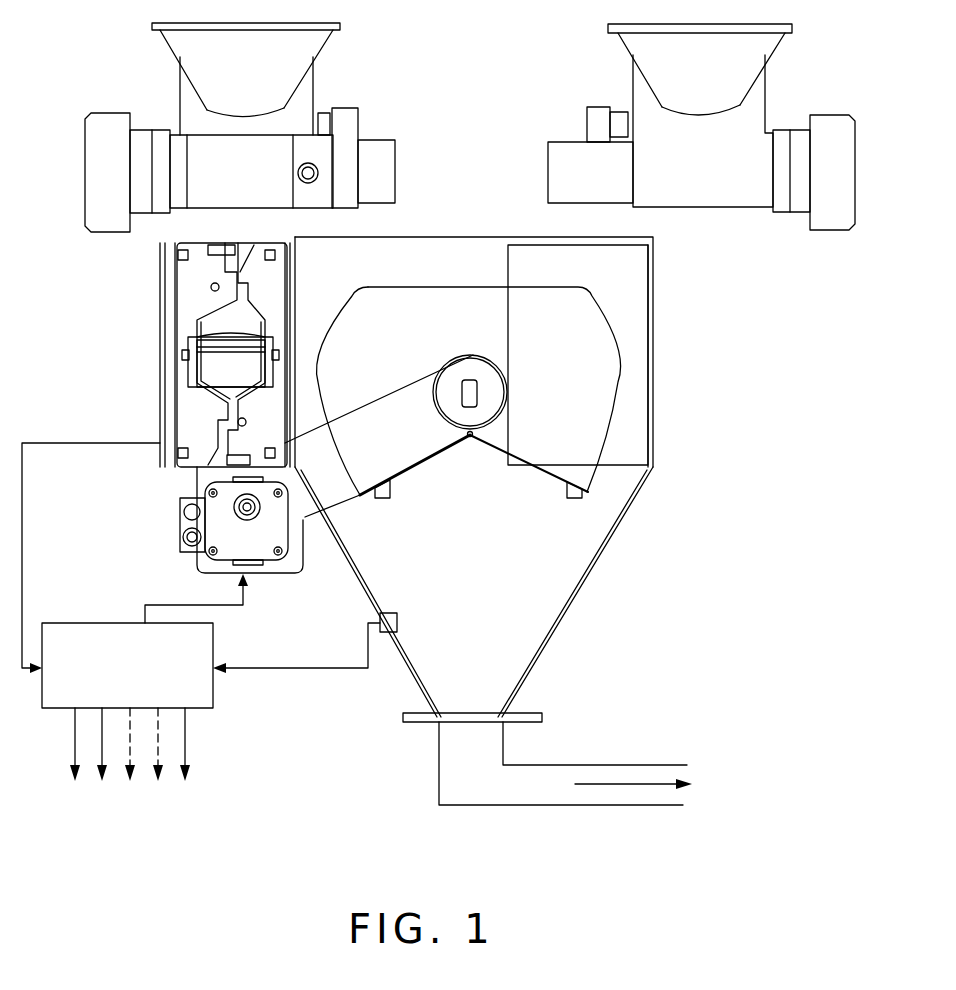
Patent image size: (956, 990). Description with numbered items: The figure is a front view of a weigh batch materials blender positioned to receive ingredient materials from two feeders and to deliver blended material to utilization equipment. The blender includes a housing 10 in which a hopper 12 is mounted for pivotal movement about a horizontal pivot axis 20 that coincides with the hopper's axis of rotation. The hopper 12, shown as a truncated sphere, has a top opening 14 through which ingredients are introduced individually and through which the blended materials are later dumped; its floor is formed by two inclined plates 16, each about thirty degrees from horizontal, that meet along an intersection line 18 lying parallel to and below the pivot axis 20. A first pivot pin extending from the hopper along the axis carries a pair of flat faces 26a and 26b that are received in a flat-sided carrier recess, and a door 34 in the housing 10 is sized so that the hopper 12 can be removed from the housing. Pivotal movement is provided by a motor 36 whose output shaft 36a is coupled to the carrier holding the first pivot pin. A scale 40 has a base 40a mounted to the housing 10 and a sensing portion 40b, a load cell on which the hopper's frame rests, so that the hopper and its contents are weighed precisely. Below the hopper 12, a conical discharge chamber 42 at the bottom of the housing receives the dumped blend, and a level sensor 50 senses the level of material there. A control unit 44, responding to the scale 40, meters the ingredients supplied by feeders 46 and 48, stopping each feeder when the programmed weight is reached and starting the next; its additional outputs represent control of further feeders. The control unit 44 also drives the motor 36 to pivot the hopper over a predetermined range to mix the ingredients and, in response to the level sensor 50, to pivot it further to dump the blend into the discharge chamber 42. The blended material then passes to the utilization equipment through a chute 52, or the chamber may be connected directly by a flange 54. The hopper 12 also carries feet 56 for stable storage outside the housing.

The housing 10 is at (473, 237).
The hopper 12 is at (603, 317).
The top opening 14 is at (436, 287).
The inclined plates 16 is at (457, 442).
The intersection line 18 is at (467, 442).
The horizontal pivot axis 20 is at (467, 380).
The flat face 26a is at (458, 396).
The flat face 26b is at (477, 395).
The door 34 is at (653, 386).
The motor 36 is at (285, 538).
The output shaft 36a is at (249, 511).
The scale 40 is at (158, 400).
The base 40a is at (268, 243).
The sensing portion 40b is at (196, 328).
The discharge chamber 42 is at (570, 610).
The control unit 44 is at (115, 623).
The feeder 46 is at (358, 66).
The feeder 48 is at (590, 64).
The level sensor 50 is at (397, 623).
The chute 52 is at (543, 805).
The flange 54 is at (543, 713).
The feet 56 is at (383, 498).